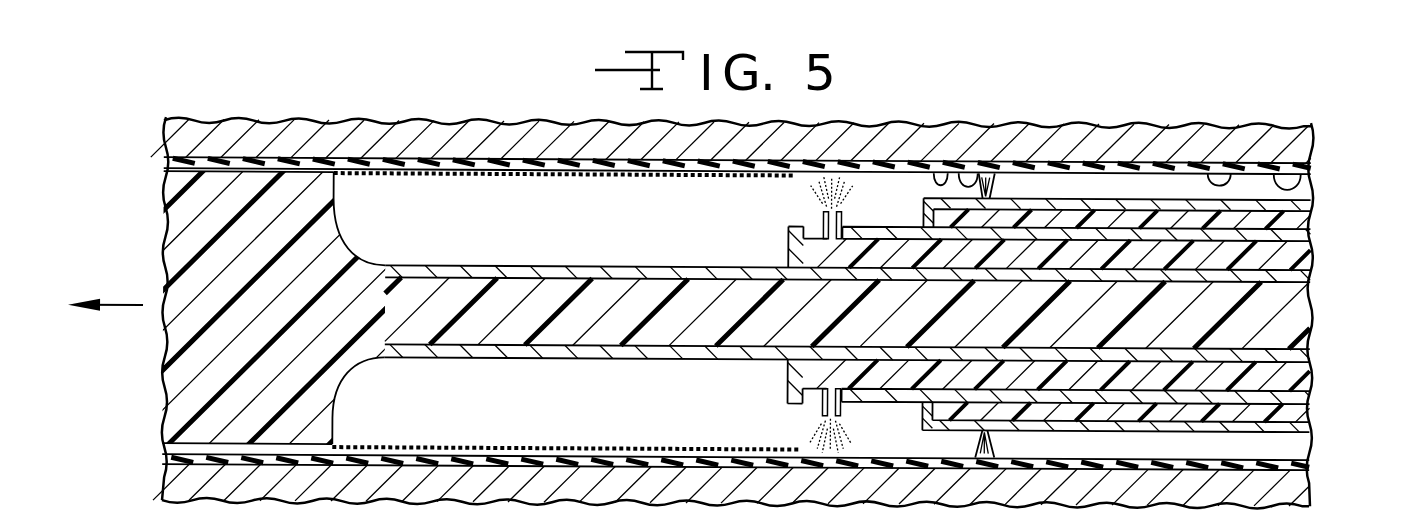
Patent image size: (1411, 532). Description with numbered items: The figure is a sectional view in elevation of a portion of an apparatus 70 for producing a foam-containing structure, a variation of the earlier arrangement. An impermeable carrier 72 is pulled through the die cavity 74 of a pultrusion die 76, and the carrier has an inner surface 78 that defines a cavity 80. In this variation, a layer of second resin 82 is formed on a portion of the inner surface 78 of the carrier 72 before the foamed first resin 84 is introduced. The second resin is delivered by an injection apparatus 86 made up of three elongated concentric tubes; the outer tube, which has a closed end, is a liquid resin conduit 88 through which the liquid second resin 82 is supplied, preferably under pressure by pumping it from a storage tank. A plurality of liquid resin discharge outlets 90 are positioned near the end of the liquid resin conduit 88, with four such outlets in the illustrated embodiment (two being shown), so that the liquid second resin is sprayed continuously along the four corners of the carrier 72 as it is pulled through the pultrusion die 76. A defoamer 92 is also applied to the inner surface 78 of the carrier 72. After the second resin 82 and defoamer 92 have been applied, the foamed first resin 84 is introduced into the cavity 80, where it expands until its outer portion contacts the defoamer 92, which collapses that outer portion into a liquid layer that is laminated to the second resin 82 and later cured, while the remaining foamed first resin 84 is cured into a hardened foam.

The apparatus 70 is at (262, 98).
The impermeable carrier 72 is at (1313, 158).
The die cavity 74 is at (1236, 171).
The pultrusion die 76 is at (1192, 171).
The inner surface 78 is at (1308, 189).
The cavity 80 is at (1280, 452).
The layer of second resin 82 is at (955, 173).
The foamed first resin 84 is at (338, 252).
The injection apparatus 86 is at (1118, 205).
The liquid resin conduit 88 is at (1072, 197).
The liquid resin discharge outlets 90 is at (993, 197).
The defoamer 92 is at (815, 192).